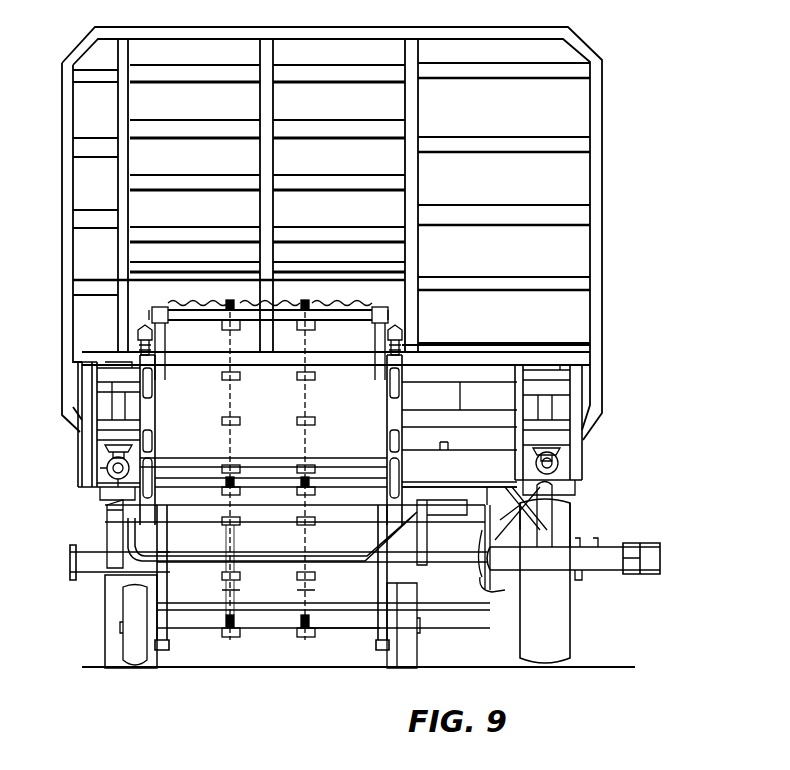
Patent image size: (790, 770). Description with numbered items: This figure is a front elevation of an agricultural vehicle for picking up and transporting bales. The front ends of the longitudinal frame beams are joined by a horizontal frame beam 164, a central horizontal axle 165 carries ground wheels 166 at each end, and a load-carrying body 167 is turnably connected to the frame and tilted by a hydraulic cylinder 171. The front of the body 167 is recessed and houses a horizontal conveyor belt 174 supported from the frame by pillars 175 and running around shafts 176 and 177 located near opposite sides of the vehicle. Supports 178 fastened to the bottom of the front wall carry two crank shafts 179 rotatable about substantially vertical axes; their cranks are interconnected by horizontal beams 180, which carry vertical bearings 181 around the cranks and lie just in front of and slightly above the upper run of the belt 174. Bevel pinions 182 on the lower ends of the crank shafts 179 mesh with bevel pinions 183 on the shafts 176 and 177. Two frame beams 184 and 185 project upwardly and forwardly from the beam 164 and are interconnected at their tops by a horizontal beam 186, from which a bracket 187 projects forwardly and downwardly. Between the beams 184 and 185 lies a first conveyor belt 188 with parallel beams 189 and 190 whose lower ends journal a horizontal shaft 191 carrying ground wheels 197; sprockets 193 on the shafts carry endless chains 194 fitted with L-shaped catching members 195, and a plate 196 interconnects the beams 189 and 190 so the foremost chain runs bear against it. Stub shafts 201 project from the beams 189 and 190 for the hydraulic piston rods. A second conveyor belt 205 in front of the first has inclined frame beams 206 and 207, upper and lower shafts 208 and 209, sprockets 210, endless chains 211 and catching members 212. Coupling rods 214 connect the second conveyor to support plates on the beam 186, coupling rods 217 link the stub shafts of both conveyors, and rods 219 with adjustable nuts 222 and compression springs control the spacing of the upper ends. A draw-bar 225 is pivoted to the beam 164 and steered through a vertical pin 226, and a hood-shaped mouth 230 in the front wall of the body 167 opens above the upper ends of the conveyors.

The horizontal frame beam 164 is at (95, 574).
The horizontal axle 165 is at (476, 590).
The ground wheels 166 is at (110, 610).
The body 167 is at (597, 152).
The hydraulic cylinder 171 is at (560, 518).
The conveyor belt 174 is at (498, 452).
The pillars 175 is at (492, 482).
The shaft 176 is at (560, 493).
The shaft 177 is at (100, 485).
The supports 178 is at (88, 367).
The crank shafts 179 is at (110, 405).
The horizontal beams 180 is at (520, 402).
The vertical bearings 181 is at (130, 420).
The bevel pinions 182 is at (100, 468).
The bevel pinions 183 is at (108, 476).
The frame beam 184 is at (426, 540).
The frame beam 185 is at (105, 532).
The horizontal beam 186 is at (346, 522).
The bracket 187 is at (270, 558).
The conveyor belt 188 is at (258, 628).
The beam 189 is at (375, 645).
The beam 190 is at (164, 641).
The horizontal shaft 191 is at (345, 630).
The sprockets 193 is at (226, 612).
The endless chains 194 is at (228, 527).
The catching members 195 is at (229, 576).
The plate 196 is at (258, 632).
The ground wheels 197 is at (130, 645).
The stub shafts 201 is at (380, 432).
The second conveyor belt 205 is at (380, 305).
The frame beam 206 is at (372, 340).
The frame beam 207 is at (168, 341).
The upper horizontal shaft 208 is at (192, 293).
The lower horizontal shaft 209 is at (272, 465).
The sprockets 210 is at (231, 308).
The endless chains 211 is at (232, 420).
The catching members 212 is at (236, 380).
The coupling rods 214 is at (150, 470).
The coupling rods 217 is at (150, 442).
The rods 219 is at (145, 377).
The nuts 222 is at (145, 325).
The draw-bar 225 is at (612, 552).
The vertical pin 226 is at (582, 580).
The hood-shaped mouth 230 is at (413, 108).